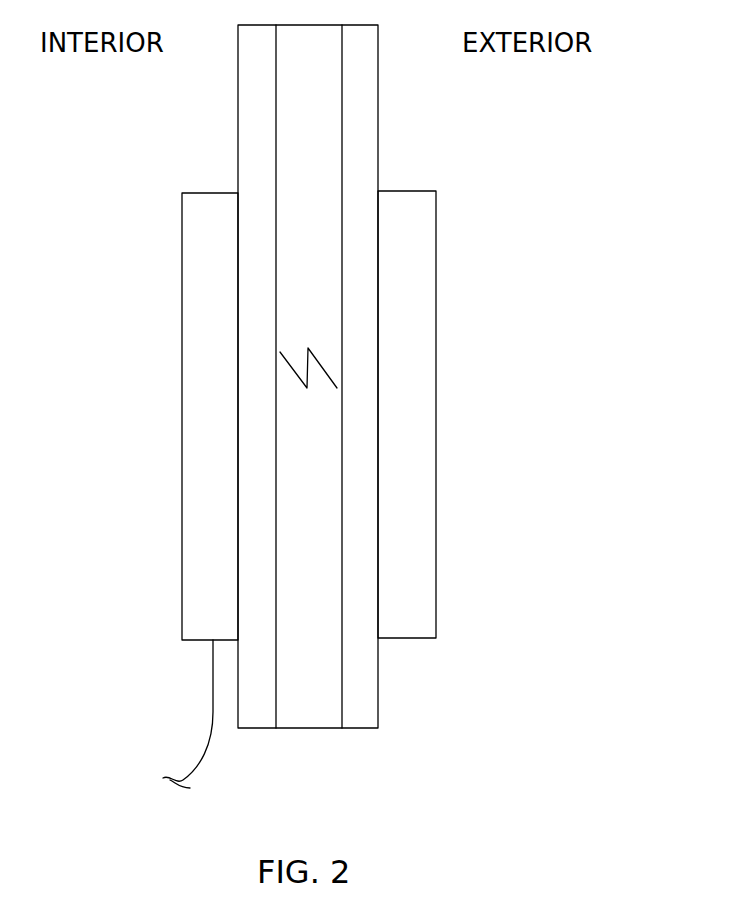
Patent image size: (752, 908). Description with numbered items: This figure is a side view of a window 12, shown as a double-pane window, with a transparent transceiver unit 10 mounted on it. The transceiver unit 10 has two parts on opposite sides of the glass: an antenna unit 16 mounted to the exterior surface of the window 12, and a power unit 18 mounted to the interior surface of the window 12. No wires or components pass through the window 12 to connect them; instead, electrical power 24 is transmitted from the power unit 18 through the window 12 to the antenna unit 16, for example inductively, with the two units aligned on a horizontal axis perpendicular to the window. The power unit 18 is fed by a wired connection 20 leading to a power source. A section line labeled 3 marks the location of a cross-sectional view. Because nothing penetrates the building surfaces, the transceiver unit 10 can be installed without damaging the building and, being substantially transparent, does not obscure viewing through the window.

The transceiver unit 10 is at (199, 165).
The window 12 is at (378, 120).
The section line 3- 3 is at (457, 250).
The antenna unit 16 is at (422, 407).
The power unit 18 is at (202, 412).
The wired connection 20 is at (213, 717).
The electrical power 24 is at (307, 350).